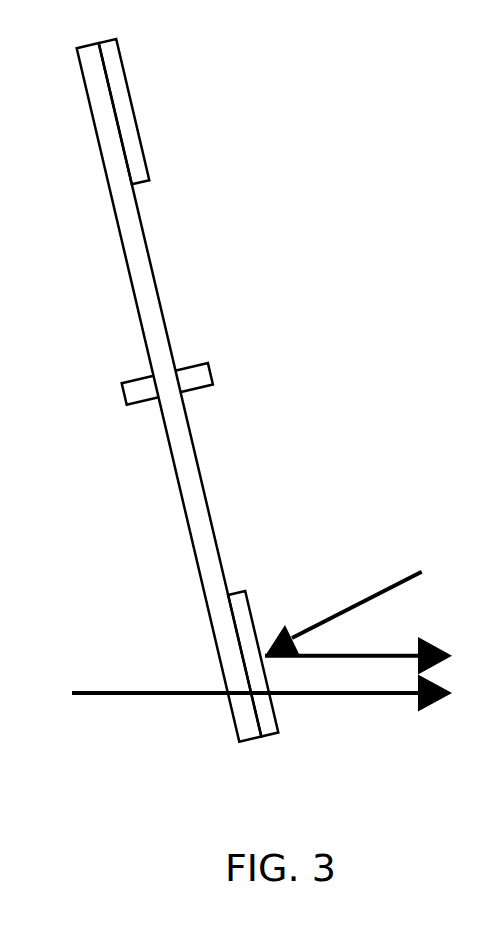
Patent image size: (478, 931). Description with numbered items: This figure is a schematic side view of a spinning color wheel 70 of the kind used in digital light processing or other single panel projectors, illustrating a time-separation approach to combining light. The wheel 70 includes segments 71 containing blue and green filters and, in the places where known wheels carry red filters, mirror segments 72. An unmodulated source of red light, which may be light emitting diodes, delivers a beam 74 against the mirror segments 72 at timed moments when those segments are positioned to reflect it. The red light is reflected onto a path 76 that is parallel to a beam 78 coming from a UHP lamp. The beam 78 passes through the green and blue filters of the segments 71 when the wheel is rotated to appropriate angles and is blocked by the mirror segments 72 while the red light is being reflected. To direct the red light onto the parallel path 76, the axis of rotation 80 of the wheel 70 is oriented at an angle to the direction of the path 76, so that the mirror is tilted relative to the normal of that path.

The spinning color wheel 70 is at (177, 390).
The segments 71 is at (125, 256).
The mirror segments 72 is at (245, 592).
The beam 74 is at (387, 589).
The path 76 is at (347, 658).
The beam 78 is at (295, 695).
The axis of rotation 80 is at (189, 367).